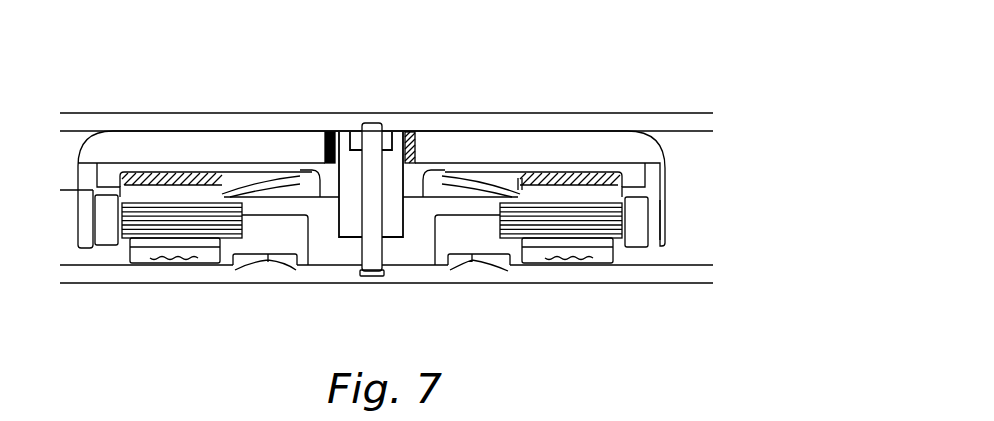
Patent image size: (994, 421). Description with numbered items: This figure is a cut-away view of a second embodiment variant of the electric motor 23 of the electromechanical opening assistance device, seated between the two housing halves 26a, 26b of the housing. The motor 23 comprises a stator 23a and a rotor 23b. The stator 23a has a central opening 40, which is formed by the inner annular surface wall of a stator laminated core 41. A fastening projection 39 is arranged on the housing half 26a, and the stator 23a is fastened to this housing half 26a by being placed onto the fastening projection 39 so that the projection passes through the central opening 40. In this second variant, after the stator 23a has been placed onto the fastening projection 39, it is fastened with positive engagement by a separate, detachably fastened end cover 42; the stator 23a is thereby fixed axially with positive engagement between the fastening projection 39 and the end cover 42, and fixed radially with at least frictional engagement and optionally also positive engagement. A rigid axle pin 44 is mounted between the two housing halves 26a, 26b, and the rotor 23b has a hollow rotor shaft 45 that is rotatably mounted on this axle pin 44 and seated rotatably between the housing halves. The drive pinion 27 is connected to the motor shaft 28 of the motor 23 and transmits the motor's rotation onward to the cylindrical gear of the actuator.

The electric motor 23 is at (160, 148).
The stator 23a is at (168, 252).
The rotor 23b is at (655, 187).
The housing half 26a is at (702, 273).
The housing half 26b is at (707, 122).
The drive pinion 27 is at (417, 143).
The motor shaft 28 is at (353, 197).
The fastening projection 39 is at (473, 223).
The central opening 40 is at (243, 222).
The stator laminated core 41 is at (218, 246).
The end cover 42 is at (468, 207).
The axle pin 44 is at (372, 155).
The hollow rotor shaft 45 is at (393, 210).